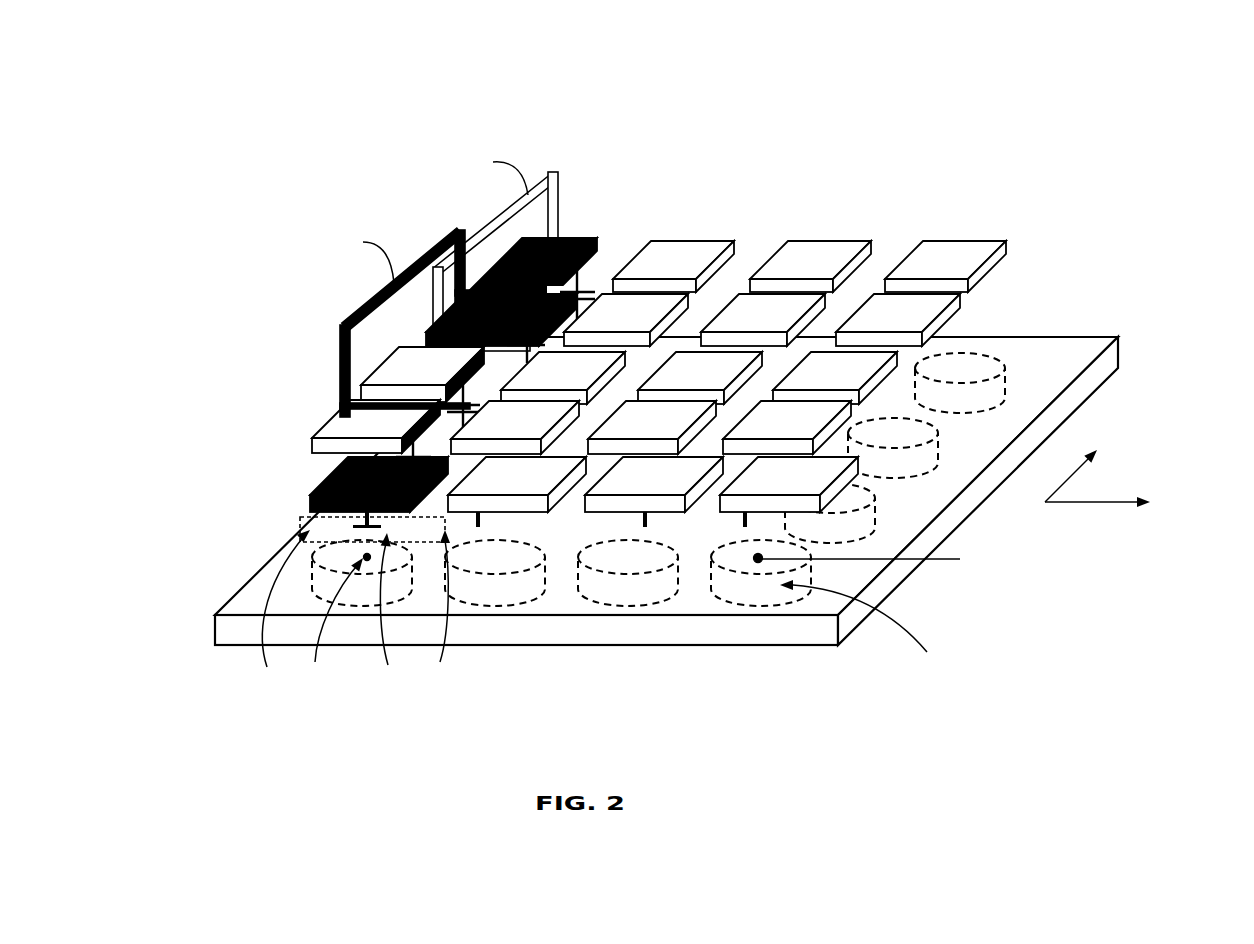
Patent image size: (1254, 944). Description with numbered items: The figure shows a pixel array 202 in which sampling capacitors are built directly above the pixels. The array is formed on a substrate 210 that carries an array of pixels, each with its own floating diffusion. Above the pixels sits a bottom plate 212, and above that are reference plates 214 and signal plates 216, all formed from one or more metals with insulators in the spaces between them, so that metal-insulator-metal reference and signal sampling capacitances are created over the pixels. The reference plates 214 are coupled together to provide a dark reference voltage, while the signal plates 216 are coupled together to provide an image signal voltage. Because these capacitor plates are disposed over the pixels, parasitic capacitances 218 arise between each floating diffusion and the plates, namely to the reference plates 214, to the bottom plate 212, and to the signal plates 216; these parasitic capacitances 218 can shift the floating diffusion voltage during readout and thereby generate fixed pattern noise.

The pixel array 202 is at (653, 406).
The substrate 210 is at (764, 646).
The bottom plate 212 is at (277, 484).
The reference plates 214 is at (328, 428).
The signal plates 216 is at (387, 377).
The parasitic capacitances 218 is at (297, 518).